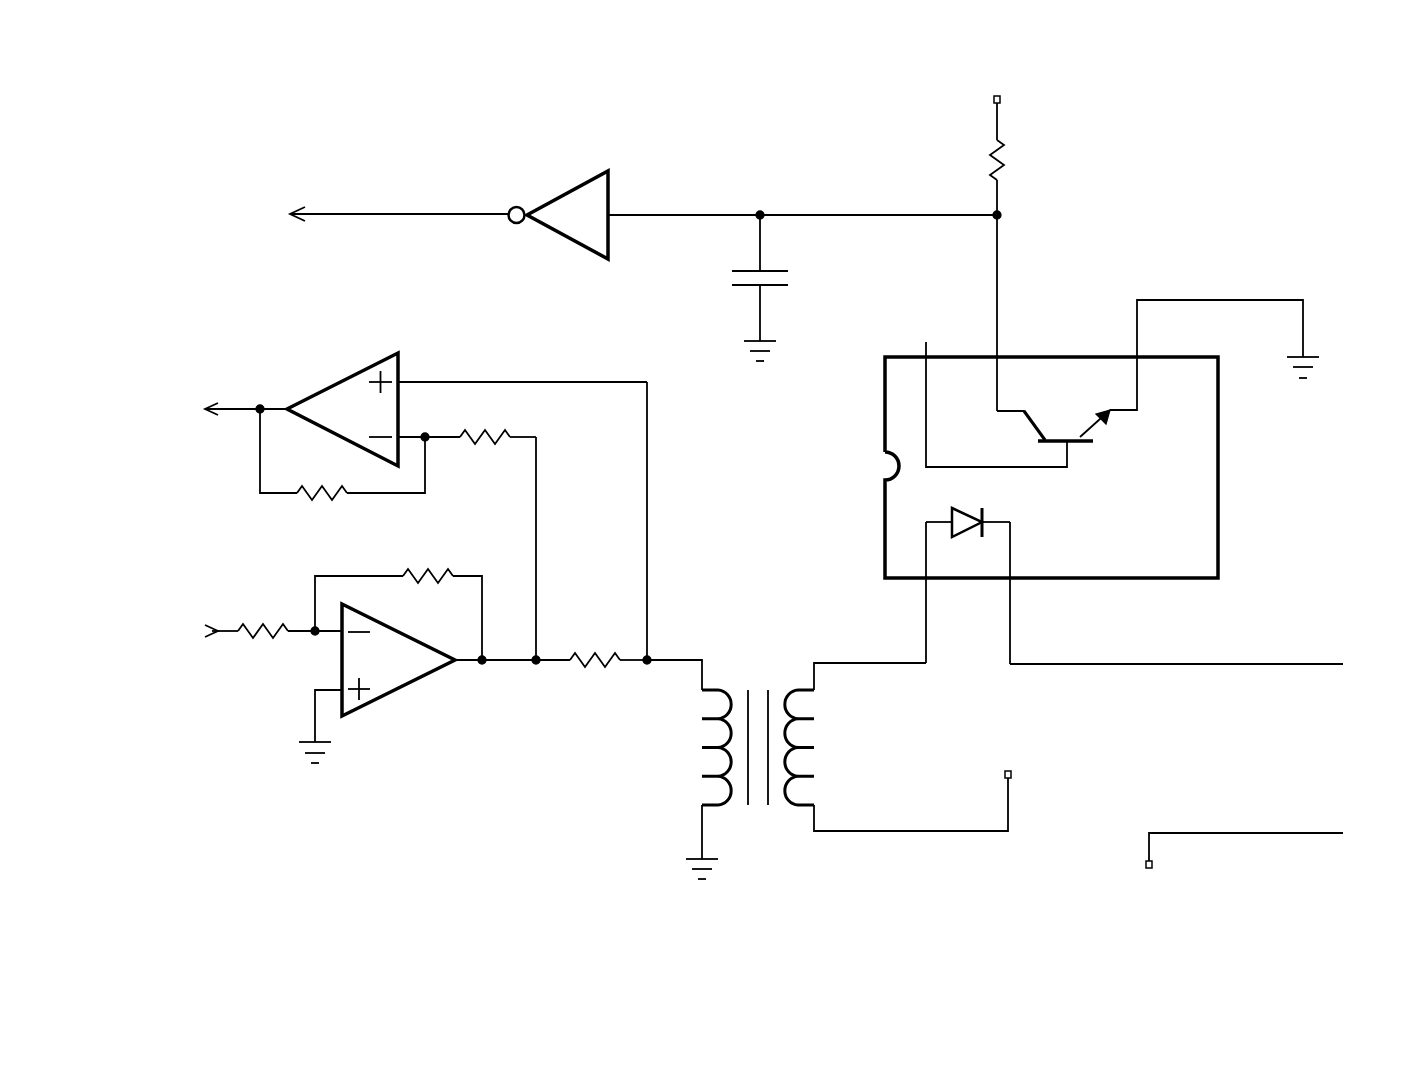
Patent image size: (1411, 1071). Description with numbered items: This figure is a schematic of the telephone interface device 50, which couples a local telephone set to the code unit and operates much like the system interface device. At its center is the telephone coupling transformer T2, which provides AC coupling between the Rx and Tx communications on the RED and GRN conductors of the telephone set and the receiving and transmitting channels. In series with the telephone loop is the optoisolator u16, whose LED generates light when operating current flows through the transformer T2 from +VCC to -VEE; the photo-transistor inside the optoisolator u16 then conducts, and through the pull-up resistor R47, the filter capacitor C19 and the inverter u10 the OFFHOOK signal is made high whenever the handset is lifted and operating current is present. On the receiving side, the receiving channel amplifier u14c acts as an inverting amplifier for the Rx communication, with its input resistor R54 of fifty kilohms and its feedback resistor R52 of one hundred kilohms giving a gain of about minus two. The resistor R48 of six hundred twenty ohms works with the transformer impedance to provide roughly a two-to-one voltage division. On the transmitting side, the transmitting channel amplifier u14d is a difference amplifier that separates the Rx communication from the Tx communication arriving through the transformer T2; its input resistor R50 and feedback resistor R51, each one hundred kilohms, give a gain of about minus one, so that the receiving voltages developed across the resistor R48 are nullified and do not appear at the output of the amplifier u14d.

The telephone interface device 50 is at (1410, 208).
The inverter u10 is at (559, 215).
The capacitor C19 is at (790, 286).
The resistor R47 is at (1015, 143).
The transmitting channel amplifier u14d is at (342, 409).
The input resistor R50 is at (497, 532).
The feedback resistor R51 is at (342, 454).
The feedback resistor R52 is at (398, 602).
The input resistor R54 is at (289, 620).
The receiving channel amplifier u14c is at (417, 683).
The resistor R48 is at (591, 646).
The telephone coupling transformer T2 is at (839, 769).
The optoisolator u16 is at (1102, 439).